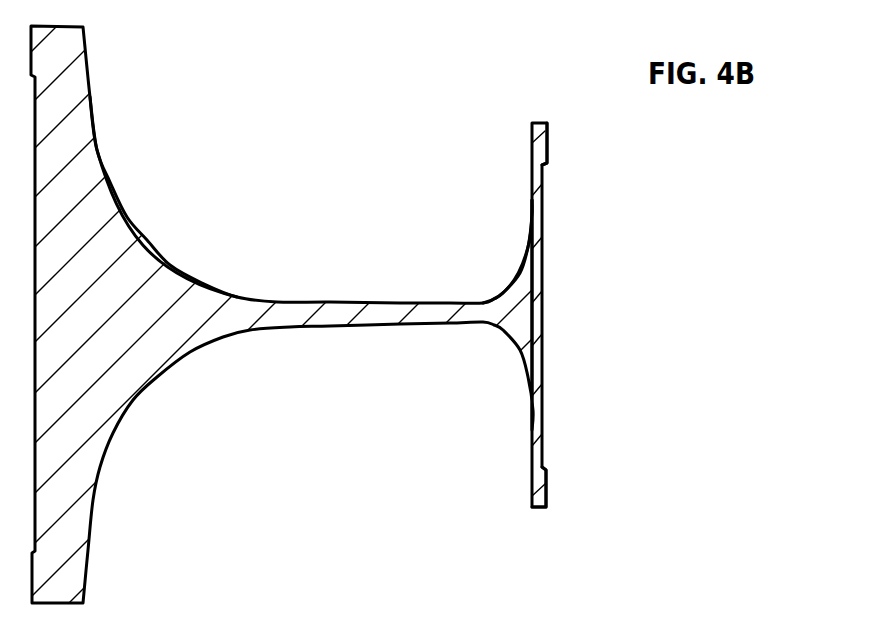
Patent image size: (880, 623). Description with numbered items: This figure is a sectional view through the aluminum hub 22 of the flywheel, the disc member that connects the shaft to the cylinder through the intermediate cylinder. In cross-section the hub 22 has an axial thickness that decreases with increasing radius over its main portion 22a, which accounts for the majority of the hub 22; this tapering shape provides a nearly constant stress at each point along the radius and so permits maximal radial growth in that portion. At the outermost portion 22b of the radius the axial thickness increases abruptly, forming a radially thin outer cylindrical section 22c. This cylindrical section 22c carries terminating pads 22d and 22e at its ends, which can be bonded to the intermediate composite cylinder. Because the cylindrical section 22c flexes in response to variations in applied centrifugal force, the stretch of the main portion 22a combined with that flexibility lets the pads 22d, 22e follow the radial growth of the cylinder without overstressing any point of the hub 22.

The hub 22 is at (252, 306).
The main portion 22a is at (167, 120).
The outermost portion 22b is at (490, 275).
The outer cylindrical section 22c is at (541, 122).
The terminating pad 22d is at (544, 492).
The terminating pad 22e is at (548, 142).